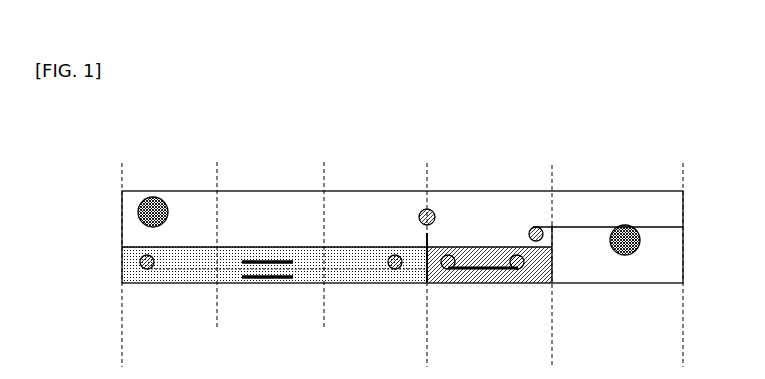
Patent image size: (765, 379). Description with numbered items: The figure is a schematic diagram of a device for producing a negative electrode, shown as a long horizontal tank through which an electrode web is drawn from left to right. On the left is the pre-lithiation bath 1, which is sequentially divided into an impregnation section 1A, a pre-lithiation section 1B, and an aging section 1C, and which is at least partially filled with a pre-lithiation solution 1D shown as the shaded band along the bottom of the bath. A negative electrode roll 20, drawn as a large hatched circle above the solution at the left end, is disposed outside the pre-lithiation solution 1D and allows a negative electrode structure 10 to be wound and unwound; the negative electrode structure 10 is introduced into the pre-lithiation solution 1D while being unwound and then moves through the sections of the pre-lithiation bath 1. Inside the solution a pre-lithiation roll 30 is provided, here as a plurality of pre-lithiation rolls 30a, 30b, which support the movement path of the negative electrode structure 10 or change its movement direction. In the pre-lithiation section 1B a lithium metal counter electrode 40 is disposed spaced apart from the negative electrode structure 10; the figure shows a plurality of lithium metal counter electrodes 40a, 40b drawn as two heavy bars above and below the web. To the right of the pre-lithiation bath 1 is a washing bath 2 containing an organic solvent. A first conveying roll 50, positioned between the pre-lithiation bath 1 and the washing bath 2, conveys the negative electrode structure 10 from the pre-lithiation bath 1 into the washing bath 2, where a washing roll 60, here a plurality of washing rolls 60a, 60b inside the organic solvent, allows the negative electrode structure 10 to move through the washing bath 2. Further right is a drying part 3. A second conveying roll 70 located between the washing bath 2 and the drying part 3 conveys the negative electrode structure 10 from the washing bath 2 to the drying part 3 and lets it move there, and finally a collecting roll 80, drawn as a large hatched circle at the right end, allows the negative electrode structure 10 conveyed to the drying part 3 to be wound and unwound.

The pre-lithiation bath 1 is at (426, 353).
The impregnation section 1A is at (216, 312).
The pre-lithiation section 1B is at (323, 312).
The aging section 1C is at (426, 312).
The pre-lithiation solution 1D is at (132, 275).
The washing bath 2 is at (551, 353).
The drying part 3 is at (682, 353).
The negative electrode structure 10 is at (137, 237).
The negative electrode roll 20 is at (153, 197).
The pre-lithiation roll 30 is at (234, 205).
The pre-lithiation roll 30a is at (140, 262).
The pre-lithiation roll 30b is at (392, 255).
The lithium metal counter electrode 40 is at (266, 207).
The lithium metal counter electrode 40a is at (257, 259).
The lithium metal counter electrode 40b is at (278, 274).
The first conveying roll 50 is at (422, 210).
The washing roll 60 is at (480, 204).
The washing roll 60a is at (448, 255).
The washing roll 60b is at (517, 255).
The second conveying roll 70 is at (536, 227).
The collecting roll 80 is at (627, 226).